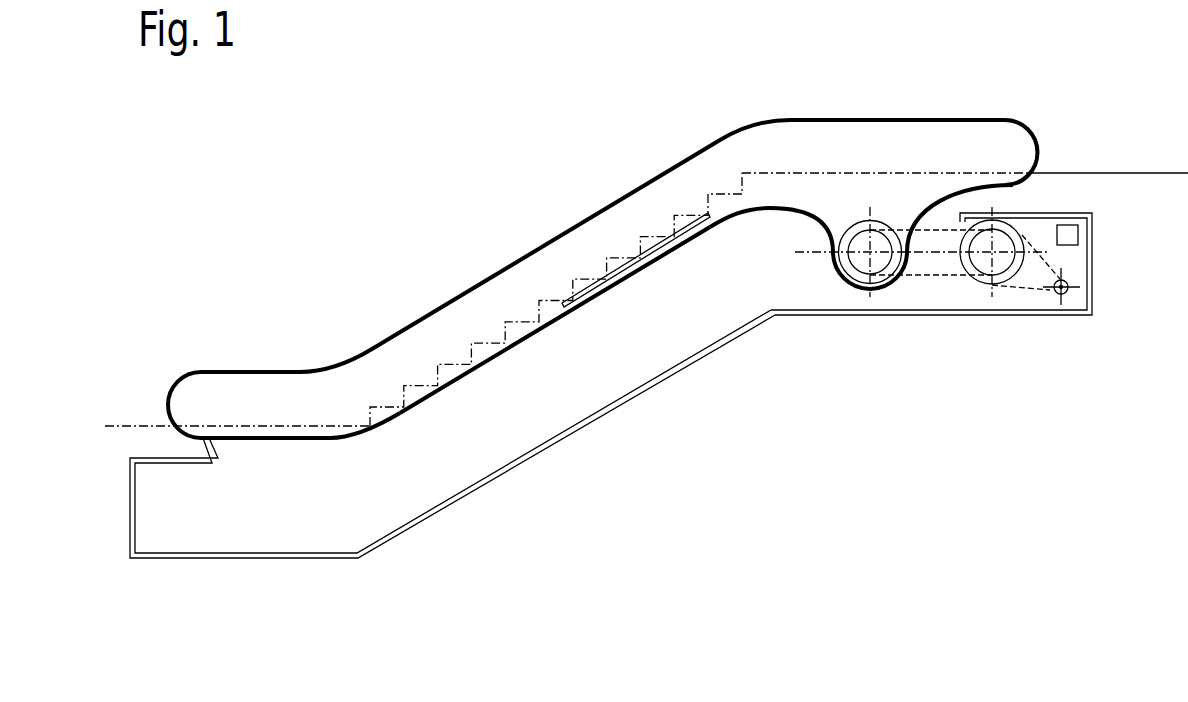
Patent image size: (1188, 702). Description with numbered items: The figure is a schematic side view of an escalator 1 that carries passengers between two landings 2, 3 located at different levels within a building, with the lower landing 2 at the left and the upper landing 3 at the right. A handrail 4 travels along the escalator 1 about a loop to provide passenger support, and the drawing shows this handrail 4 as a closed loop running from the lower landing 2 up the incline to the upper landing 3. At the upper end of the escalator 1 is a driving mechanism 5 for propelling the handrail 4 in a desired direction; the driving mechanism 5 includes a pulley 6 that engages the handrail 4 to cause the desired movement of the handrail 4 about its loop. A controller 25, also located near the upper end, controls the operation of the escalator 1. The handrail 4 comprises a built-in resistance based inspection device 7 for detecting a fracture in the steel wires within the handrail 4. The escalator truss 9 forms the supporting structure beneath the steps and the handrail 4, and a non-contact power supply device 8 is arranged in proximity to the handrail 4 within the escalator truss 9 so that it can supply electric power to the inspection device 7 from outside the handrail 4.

The escalator 1 is at (1052, 83).
The landing 2 is at (123, 425).
The landing 3 is at (1077, 173).
The handrail 4 is at (452, 302).
The driving mechanism 5 is at (937, 298).
The pulley 6 is at (843, 233).
The resistance based inspection device 7 is at (703, 235).
The non-contact power supply device 8 is at (598, 295).
The escalator truss 9 is at (225, 530).
The controller 25 is at (1081, 236).